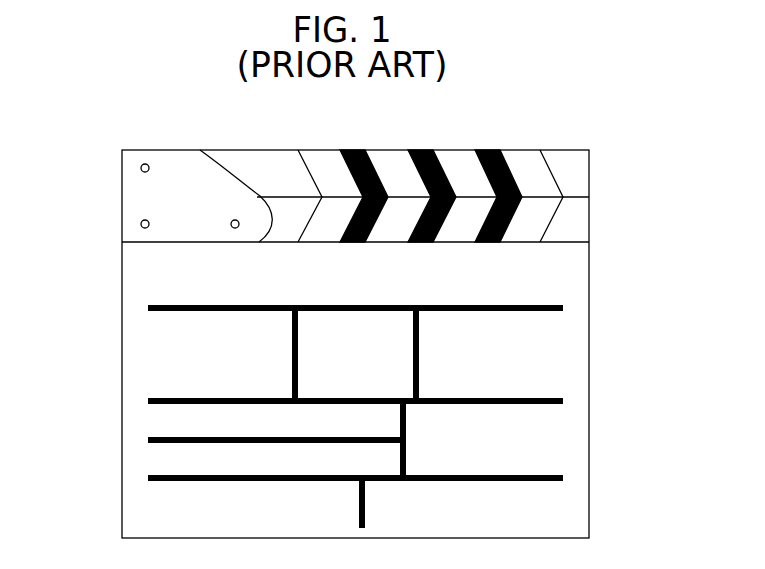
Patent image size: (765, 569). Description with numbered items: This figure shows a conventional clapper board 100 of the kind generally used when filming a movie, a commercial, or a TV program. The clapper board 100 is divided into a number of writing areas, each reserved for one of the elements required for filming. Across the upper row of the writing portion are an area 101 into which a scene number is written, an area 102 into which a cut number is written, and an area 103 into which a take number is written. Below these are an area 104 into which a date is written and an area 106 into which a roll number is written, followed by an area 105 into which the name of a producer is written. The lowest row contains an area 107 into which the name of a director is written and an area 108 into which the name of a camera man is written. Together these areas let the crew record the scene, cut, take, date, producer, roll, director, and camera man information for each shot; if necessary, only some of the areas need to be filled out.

The clapper board 100 is at (560, 108).
The area into which a scene number is written 101 is at (175, 345).
The area into which a cut number is written 102 is at (380, 327).
The area into which a take number is written 103 is at (523, 367).
The area into which a date is written 104 is at (150, 422).
The area into which the name of a producer is written 105 is at (150, 461).
The area into which a roll number is written 106 is at (523, 448).
The director field 107 is at (150, 499).
The area into which the name of a camera man is written 108 is at (523, 517).